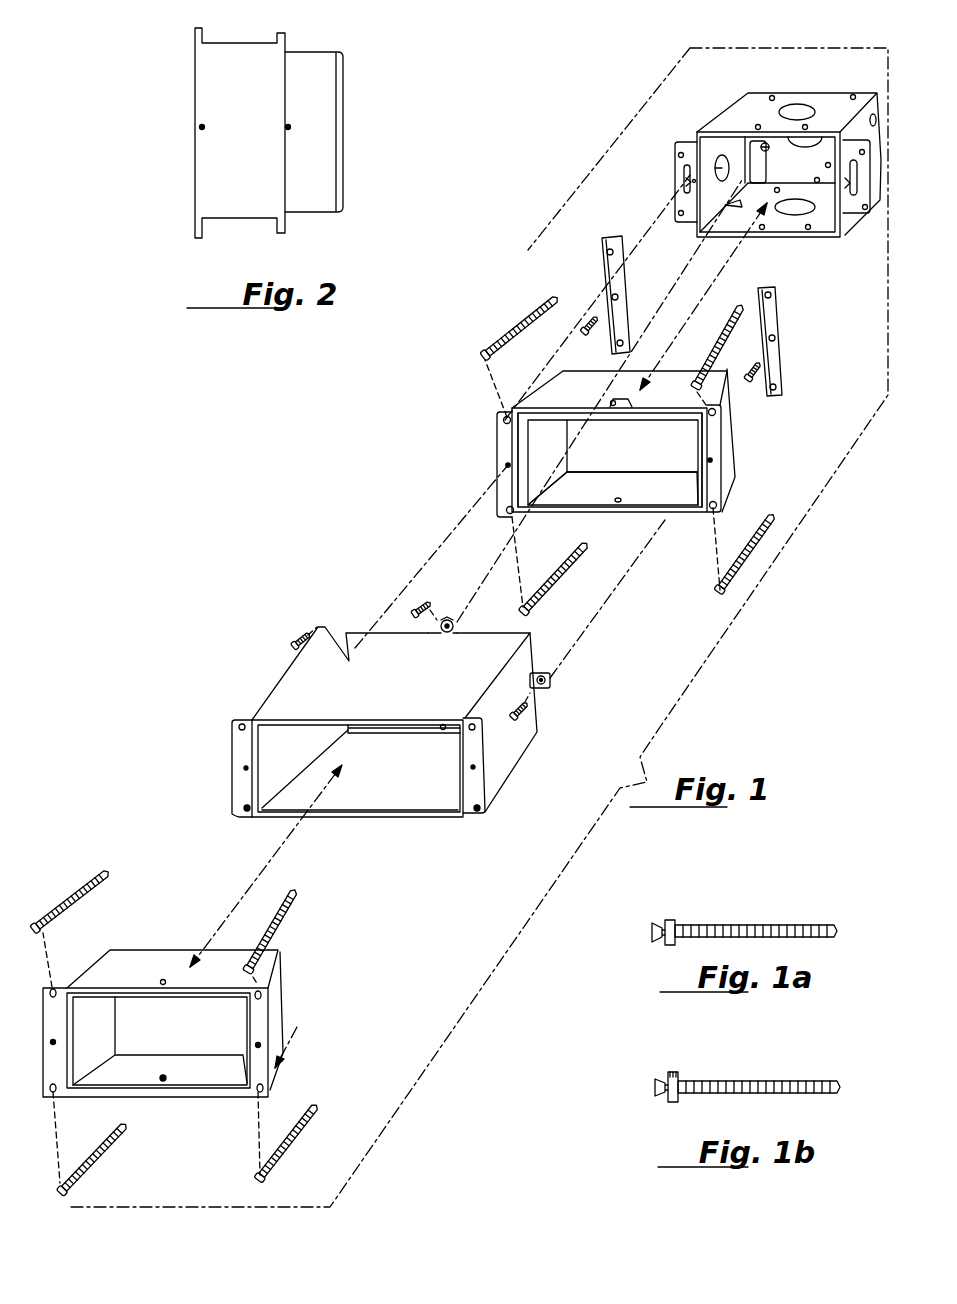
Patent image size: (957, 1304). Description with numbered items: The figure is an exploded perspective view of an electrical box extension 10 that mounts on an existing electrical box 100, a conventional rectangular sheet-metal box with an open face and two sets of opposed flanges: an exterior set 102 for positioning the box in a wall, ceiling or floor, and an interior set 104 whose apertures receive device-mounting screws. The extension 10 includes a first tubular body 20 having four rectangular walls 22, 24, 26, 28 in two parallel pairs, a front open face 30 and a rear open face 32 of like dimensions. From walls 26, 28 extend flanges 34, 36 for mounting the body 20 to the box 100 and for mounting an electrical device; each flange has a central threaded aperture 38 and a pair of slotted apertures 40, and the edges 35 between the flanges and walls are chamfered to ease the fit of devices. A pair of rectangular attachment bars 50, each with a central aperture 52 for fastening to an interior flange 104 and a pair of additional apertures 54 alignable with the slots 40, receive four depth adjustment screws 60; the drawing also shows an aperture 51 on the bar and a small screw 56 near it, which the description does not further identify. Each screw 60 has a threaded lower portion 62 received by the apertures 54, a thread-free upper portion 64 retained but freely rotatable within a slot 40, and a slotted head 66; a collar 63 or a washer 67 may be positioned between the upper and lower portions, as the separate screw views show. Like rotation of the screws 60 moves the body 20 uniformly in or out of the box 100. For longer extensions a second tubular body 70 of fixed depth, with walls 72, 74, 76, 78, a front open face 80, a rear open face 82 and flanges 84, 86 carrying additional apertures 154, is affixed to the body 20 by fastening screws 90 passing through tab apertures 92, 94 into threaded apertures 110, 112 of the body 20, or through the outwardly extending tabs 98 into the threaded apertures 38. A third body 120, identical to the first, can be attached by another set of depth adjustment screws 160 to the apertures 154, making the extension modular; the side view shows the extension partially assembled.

In FIG. 1, the electrical box extension 10 is at (797, 446).
In FIG. 2, the first body 20 is at (313, 58).
In FIG. 1, the first body 20 is at (733, 478).
In FIG. 1, the wall 22 is at (577, 378).
In FIG. 1, the wall 24 is at (652, 488).
In FIG. 1, the wall 26 is at (568, 462).
In FIG. 1, the wall 28 is at (738, 445).
In FIG. 1, the front open face 30 is at (566, 497).
In FIG. 1, the rear open face 32 is at (622, 457).
In FIG. 1, the flange 34 is at (503, 438).
In FIG. 1, the edge 35 is at (518, 448).
In FIG. 1, the flange 36 is at (720, 465).
In FIG. 1, the central threaded aperture 38 is at (506, 466).
In FIG. 1, the slotted aperture 40 is at (504, 418).
In FIG. 1, the attachment bar 50 is at (603, 278).
In FIG. 1, the central hole 51 is at (775, 338).
In FIG. 1, the central aperture 52 is at (618, 297).
In FIG. 1, the additional aperture 54 is at (610, 240).
In FIG. 1, the short screw 56 is at (594, 328).
In FIG. 1, the depth adjustment screw 60 is at (530, 312).
In FIG. 1A, the depth adjustment screw 60 is at (775, 925).
In FIG. 1B, the depth adjustment screw 60 is at (783, 1083).
In FIG. 1, the threaded lower portion 62 is at (768, 520).
In FIG. 1A, the collar 63 is at (672, 923).
In FIG. 1, the upper portion 64 is at (718, 583).
In FIG. 1, the slotted head 66 is at (713, 597).
In FIG. 1B, the washer 67 is at (678, 1075).
In FIG. 2, the second body 70 is at (225, 52).
In FIG. 1, the second body 70 is at (483, 750).
In FIG. 1, the wall 72 is at (297, 698).
In FIG. 1, the wall 74 is at (387, 793).
In FIG. 1, the wall 76 is at (285, 808).
In FIG. 1, the wall 78 is at (535, 732).
In FIG. 1, the front open face 80 is at (450, 807).
In FIG. 1, the rear open face 82 is at (363, 633).
In FIG. 1, the flange 84 is at (243, 750).
In FIG. 1, the flange 86 is at (475, 783).
In FIG. 1, the fastening device 90 is at (300, 640).
In FIG. 1, the mounting tab aperture 92 is at (457, 623).
In FIG. 1, the mounting tab aperture 94 is at (440, 730).
In FIG. 1, the mounting tab 98 is at (550, 688).
In FIG. 1, the electrical box 100 is at (747, 108).
In FIG. 1, the exterior flange 102 is at (675, 155).
In FIG. 1, the interior flange 104 is at (690, 182).
In FIG. 1, the threaded aperture 110 is at (617, 504).
In FIG. 1, the threaded aperture 112 is at (632, 408).
In FIG. 1, the third body 120 is at (283, 1062).
In FIG. 1, the additional aperture 154 is at (240, 725).
In FIG. 1, the depth adjustment screw 160 is at (88, 883).